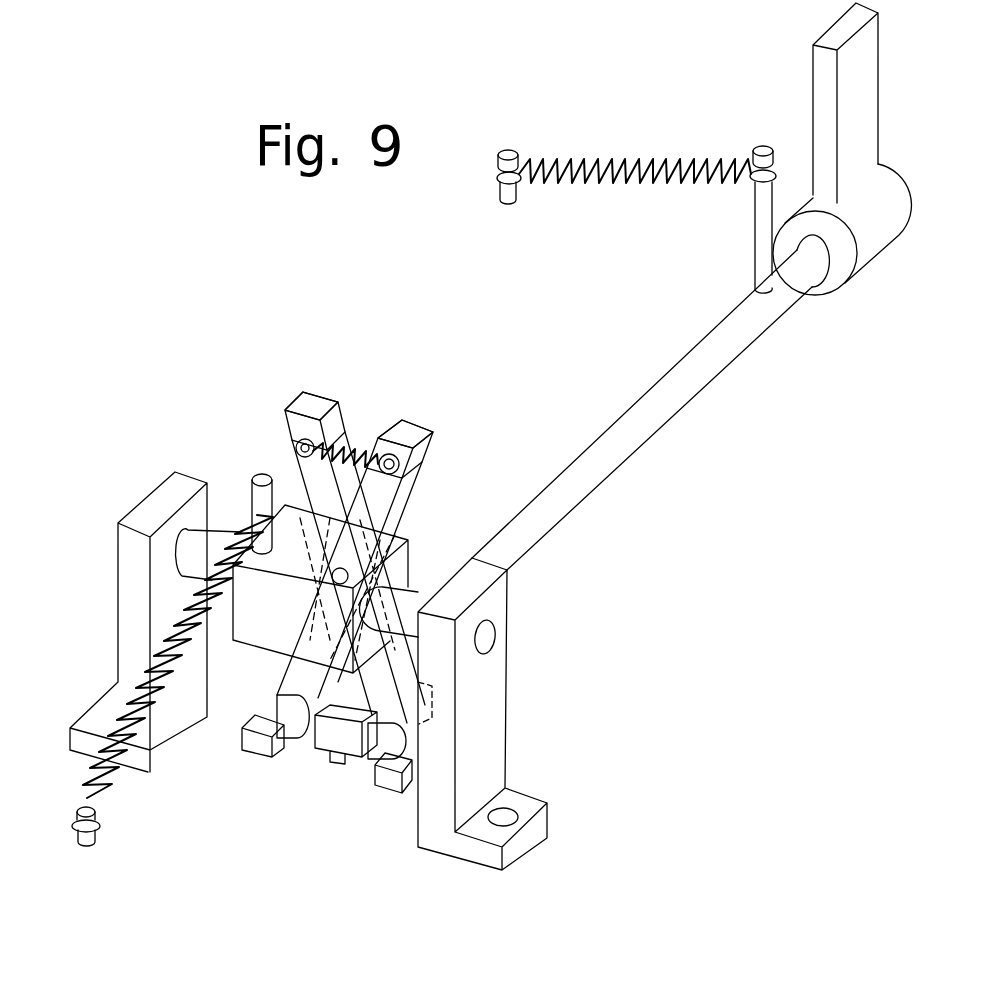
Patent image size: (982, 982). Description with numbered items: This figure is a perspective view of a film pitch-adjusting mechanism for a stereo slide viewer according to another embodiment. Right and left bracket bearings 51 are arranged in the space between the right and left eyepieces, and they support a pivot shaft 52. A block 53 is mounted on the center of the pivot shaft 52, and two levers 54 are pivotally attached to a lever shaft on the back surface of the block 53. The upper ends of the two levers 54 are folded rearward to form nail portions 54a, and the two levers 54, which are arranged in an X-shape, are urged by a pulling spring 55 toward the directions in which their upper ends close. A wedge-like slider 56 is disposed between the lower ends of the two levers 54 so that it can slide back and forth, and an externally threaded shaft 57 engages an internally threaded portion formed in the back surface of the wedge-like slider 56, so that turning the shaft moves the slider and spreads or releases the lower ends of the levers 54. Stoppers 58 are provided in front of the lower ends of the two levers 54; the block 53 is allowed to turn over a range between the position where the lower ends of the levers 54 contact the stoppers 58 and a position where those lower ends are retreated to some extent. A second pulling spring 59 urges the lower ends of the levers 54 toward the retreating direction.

The bracket bearing 51 is at (118, 607).
The pivot shaft 52 is at (496, 634).
The block 53 is at (408, 556).
The lever 54 is at (295, 428).
The nail portion 54a is at (320, 393).
The pulling spring 55 is at (347, 445).
The wedge-like slider 56 is at (325, 740).
The externally threaded shaft 57 is at (566, 464).
The stopper 58 is at (253, 747).
The pulling spring 59 is at (238, 522).